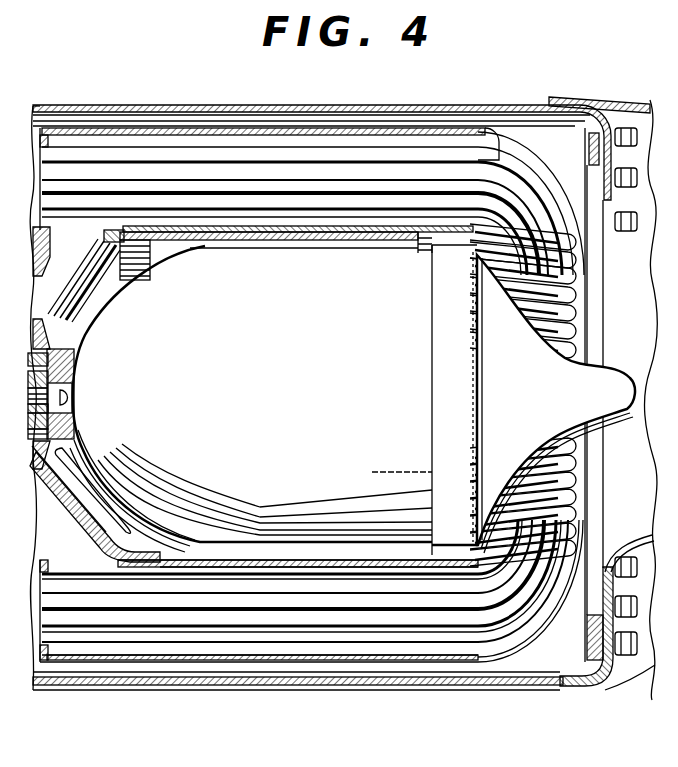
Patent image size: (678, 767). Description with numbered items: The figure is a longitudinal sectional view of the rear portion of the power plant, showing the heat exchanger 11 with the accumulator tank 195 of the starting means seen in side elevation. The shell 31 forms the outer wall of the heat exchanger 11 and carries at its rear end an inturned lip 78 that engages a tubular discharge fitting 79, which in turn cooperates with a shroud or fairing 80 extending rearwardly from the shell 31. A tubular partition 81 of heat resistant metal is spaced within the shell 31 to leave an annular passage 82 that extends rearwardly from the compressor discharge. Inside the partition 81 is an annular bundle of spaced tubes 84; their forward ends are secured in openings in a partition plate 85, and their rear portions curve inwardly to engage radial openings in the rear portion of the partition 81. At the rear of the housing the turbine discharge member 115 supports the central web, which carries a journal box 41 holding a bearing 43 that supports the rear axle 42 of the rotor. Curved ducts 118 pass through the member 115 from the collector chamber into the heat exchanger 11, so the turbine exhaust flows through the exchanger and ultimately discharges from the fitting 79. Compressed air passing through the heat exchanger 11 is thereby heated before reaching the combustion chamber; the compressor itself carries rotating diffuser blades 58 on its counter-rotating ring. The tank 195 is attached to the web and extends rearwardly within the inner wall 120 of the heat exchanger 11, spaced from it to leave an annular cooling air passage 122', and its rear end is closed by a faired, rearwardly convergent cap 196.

The diffuser blades 58 is at (20, 75).
The shroud or fairing 80 is at (598, 104).
The tubular discharge fitting 79 is at (620, 552).
The inturned lip 78 is at (602, 694).
The shell 31 is at (418, 688).
The annular cooling air passage 122' is at (269, 208).
The tubes 84 is at (113, 636).
The heat exchanger 11 is at (340, 651).
The tubular partition 81 is at (233, 668).
The annular passage 82 is at (140, 678).
The partition plate 85 is at (47, 668).
The journal box 41 is at (74, 371).
The axle 42 is at (72, 412).
The bearing 43 is at (72, 429).
The turbine discharge member 115 is at (84, 302).
The tank 195 is at (279, 426).
The inner wall 120 is at (197, 560).
The curved ducts 118 is at (78, 528).
The cap 196 is at (545, 403).